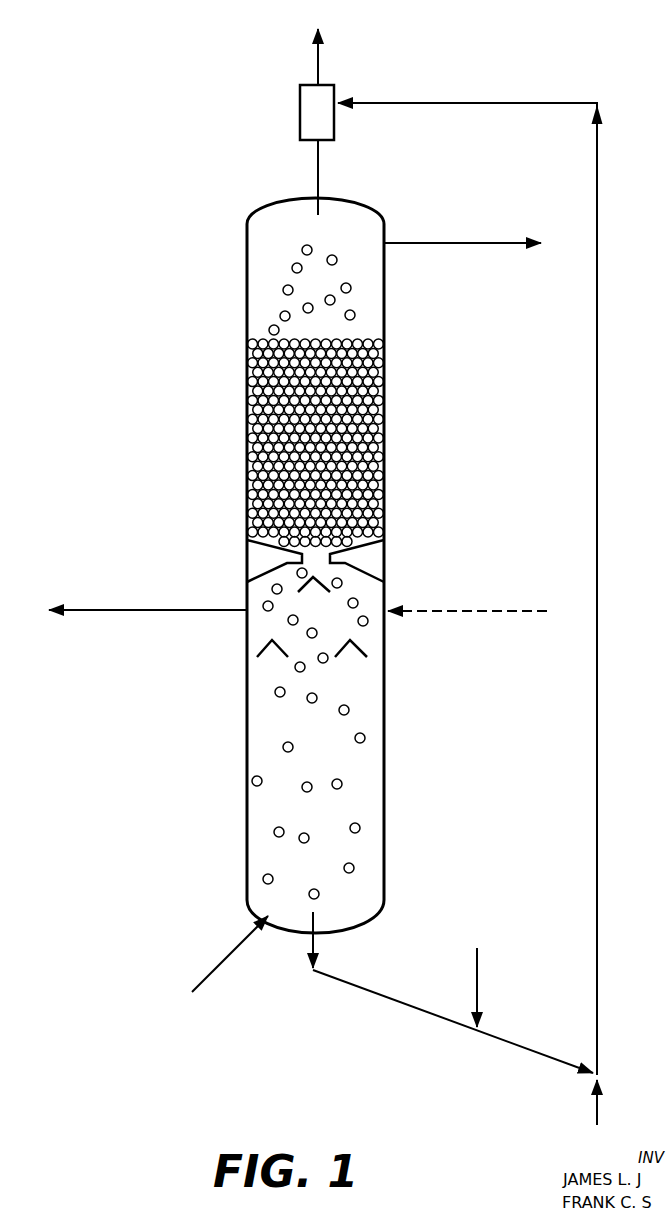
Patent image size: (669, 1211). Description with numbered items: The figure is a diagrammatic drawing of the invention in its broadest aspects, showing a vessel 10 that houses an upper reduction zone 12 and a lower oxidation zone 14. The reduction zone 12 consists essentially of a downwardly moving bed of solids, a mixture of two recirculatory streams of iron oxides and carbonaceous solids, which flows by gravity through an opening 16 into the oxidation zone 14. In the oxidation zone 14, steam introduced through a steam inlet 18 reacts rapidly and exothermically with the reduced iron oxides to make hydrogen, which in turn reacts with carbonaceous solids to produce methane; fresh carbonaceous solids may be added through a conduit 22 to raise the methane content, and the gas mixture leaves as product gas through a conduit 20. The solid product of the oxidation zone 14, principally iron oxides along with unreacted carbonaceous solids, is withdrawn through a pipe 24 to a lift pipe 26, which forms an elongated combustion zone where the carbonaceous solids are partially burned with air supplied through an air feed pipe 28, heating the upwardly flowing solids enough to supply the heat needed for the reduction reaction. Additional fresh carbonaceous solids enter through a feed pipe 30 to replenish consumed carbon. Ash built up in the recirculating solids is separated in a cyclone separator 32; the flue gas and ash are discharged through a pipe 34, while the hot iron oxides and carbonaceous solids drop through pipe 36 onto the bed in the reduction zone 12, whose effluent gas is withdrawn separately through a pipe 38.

The vessel 10 is at (247, 228).
The reduction zone 12 is at (384, 476).
The oxidation zone 14 is at (384, 764).
The opening 16 is at (315, 561).
The steam inlet 18 is at (216, 965).
The conduit 20 is at (180, 610).
The conduit 22 is at (400, 610).
The pipe 24 is at (445, 1022).
The lift pipe 26 is at (598, 522).
The air feed pipe 28 is at (598, 1108).
The feed pipe 30 is at (479, 1000).
The cyclone separator 32 is at (303, 116).
The pipe 34 is at (318, 66).
The pipe 36 is at (318, 206).
The pipe 38 is at (508, 243).